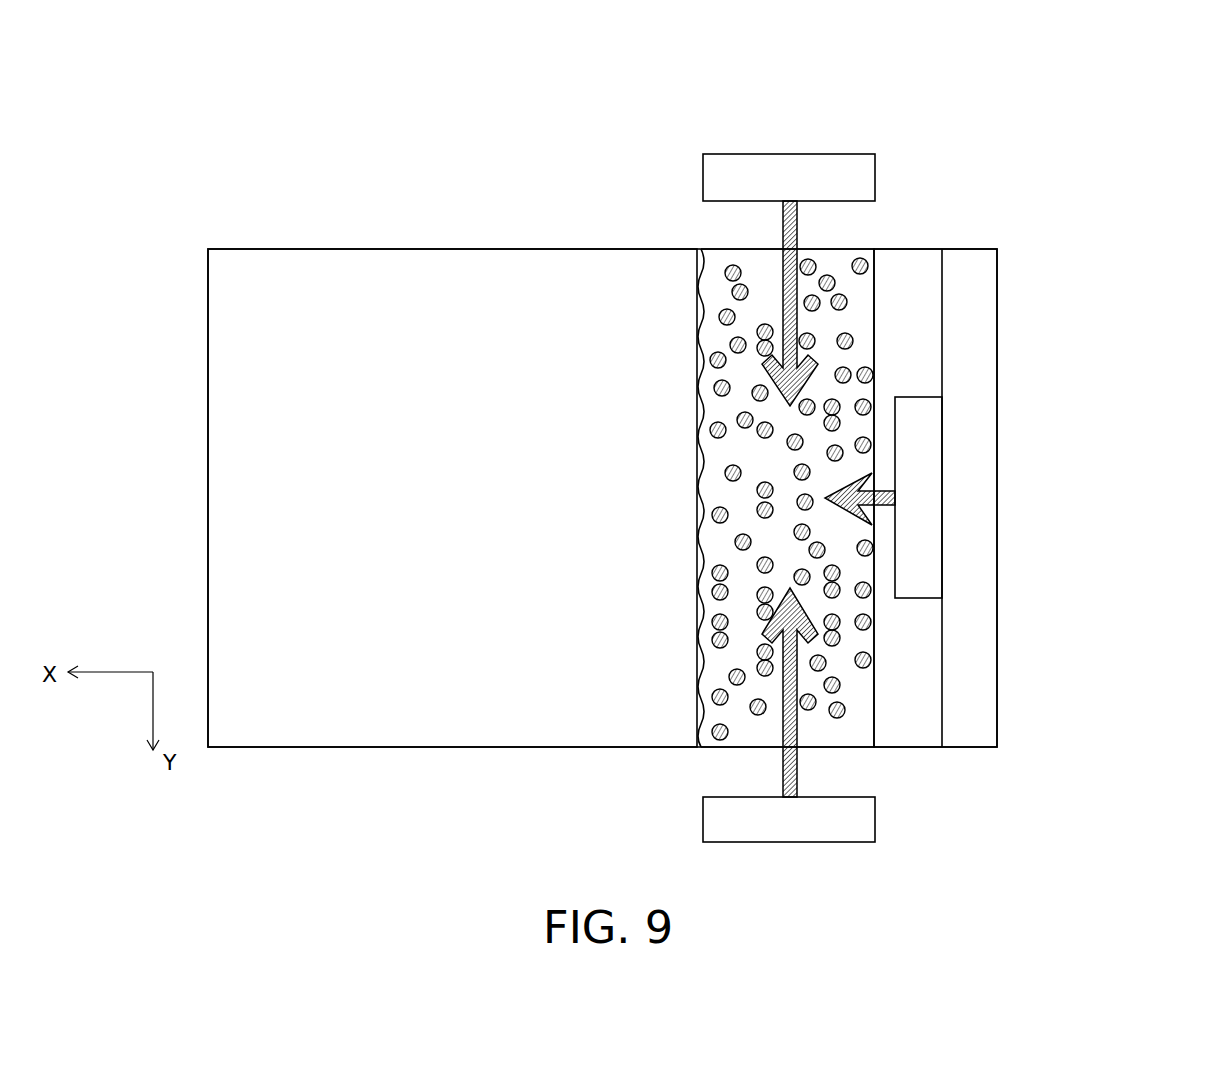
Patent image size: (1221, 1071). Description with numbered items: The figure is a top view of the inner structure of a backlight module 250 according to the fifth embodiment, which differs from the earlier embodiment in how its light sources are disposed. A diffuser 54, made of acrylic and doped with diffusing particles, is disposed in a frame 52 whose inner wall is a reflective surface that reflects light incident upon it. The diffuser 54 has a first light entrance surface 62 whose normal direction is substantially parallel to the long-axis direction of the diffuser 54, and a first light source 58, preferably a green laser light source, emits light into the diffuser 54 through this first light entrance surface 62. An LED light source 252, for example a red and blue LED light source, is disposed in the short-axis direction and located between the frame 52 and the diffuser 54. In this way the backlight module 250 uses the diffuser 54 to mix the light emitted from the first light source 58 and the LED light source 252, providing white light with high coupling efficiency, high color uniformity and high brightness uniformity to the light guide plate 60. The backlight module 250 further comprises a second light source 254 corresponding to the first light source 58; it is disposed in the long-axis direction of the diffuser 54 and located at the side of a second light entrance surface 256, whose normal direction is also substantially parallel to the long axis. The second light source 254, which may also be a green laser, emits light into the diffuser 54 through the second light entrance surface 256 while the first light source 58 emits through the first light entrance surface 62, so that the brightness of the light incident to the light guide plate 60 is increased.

The backlight module 250 is at (1089, 102).
The light guide plate 60 is at (366, 263).
The first light entrance surface 62 is at (719, 240).
The diffuser 54 is at (838, 265).
The second light entrance surface 256 is at (719, 761).
The frame 52 is at (992, 544).
The LED light source 252 is at (927, 453).
The first light source 58 is at (782, 170).
The second light source 254 is at (866, 822).